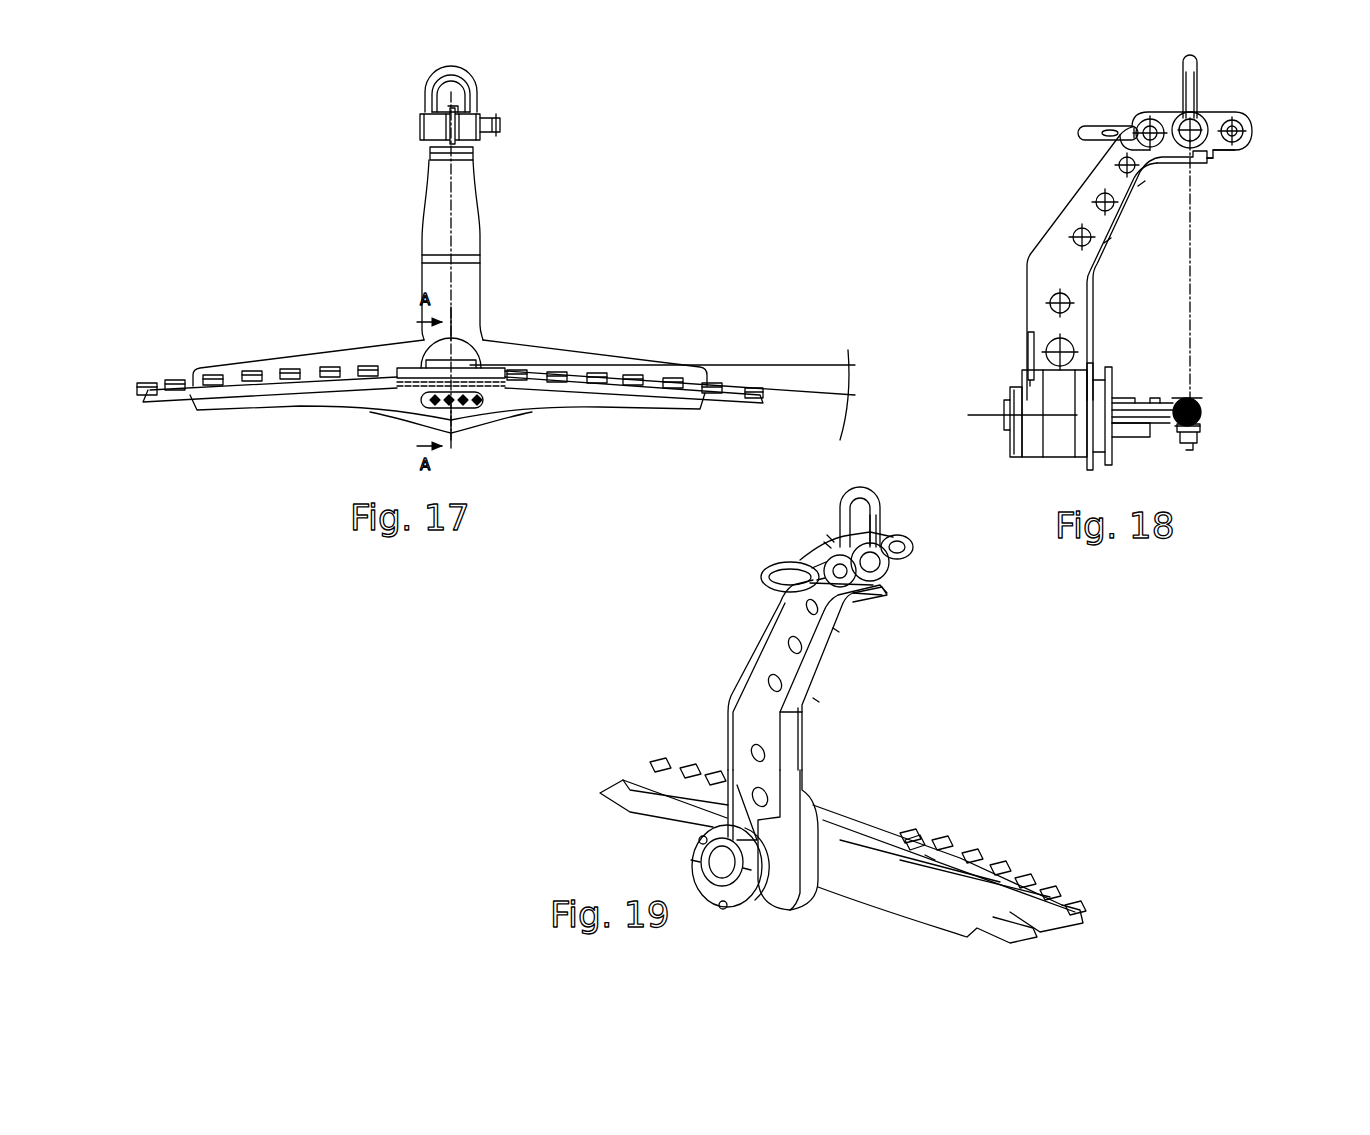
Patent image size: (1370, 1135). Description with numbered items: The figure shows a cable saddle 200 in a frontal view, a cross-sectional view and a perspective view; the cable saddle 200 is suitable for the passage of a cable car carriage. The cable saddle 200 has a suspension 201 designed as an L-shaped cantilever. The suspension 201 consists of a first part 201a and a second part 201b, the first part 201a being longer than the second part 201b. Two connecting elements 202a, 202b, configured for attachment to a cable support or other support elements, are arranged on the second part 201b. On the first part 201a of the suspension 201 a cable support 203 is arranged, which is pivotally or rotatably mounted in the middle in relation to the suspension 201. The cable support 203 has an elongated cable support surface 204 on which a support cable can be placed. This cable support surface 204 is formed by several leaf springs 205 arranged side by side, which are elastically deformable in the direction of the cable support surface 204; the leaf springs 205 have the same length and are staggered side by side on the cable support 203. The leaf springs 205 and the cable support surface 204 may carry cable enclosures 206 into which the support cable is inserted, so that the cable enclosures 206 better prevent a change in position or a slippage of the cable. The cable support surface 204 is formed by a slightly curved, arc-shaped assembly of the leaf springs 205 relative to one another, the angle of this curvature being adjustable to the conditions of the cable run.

In FIG. 17, the cable saddle 200 is at (396, 258).
In FIG. 18, the cable saddle 200 is at (1208, 264).
In FIG. 19, the cable saddle 200 is at (912, 682).
In FIG. 17, the suspension 201 is at (479, 283).
In FIG. 18, the first part 201a is at (1012, 303).
In FIG. 19, the first part 201a is at (712, 736).
In FIG. 18, the second part 201b is at (1232, 152).
In FIG. 19, the second part 201b is at (884, 600).
In FIG. 18, the connecting element 202a is at (1078, 131).
In FIG. 18, the connecting element 202b is at (1200, 72).
In FIG. 17, the cable support 203 is at (511, 347).
In FIG. 18, the cable support 203 is at (1138, 440).
In FIG. 17, the cable support surface 204 is at (588, 361).
In FIG. 19, the cable support surface 204 is at (965, 878).
In FIG. 18, the leaf springs 205 is at (1202, 412).
In FIG. 19, the leaf springs 205 is at (950, 858).
In FIG. 17, the cable enclosures 206 is at (673, 383).
In FIG. 18, the cable enclosures 206 is at (1205, 424).
In FIG. 19, the cable enclosures 206 is at (1080, 910).